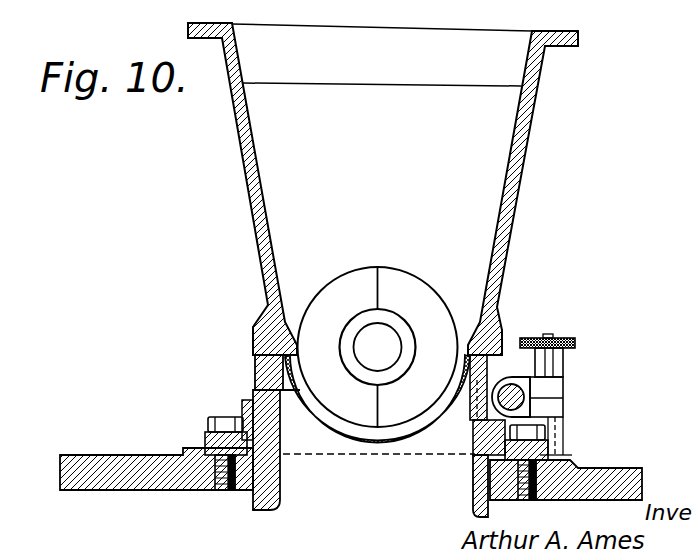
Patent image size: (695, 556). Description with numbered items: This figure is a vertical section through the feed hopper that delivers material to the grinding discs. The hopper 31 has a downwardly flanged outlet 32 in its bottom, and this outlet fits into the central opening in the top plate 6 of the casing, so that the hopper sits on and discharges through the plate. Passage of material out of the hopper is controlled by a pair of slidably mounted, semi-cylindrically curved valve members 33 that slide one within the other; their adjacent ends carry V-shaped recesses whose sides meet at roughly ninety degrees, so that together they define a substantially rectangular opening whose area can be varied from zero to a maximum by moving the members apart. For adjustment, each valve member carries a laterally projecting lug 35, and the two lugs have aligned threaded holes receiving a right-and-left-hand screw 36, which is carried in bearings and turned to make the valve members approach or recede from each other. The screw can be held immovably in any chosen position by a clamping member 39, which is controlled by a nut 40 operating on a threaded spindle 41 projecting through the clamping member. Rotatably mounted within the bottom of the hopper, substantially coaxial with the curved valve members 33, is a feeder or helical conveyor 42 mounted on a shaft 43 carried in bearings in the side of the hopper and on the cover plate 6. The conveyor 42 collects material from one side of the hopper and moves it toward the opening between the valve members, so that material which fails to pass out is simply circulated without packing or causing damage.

The top plate 6 is at (88, 455).
The hopper 31 is at (512, 182).
The downwardly flanged outlet 32 is at (281, 478).
The valve members 33 is at (390, 430).
The laterally projecting lug 35 is at (530, 382).
The right-and-left-hand screw 36 is at (525, 402).
The clamping member 39 is at (530, 378).
The nut 40 is at (575, 343).
The threaded spindle 41 is at (550, 333).
The feeder or helical conveyor 42 is at (398, 288).
The shaft 43 is at (378, 347).